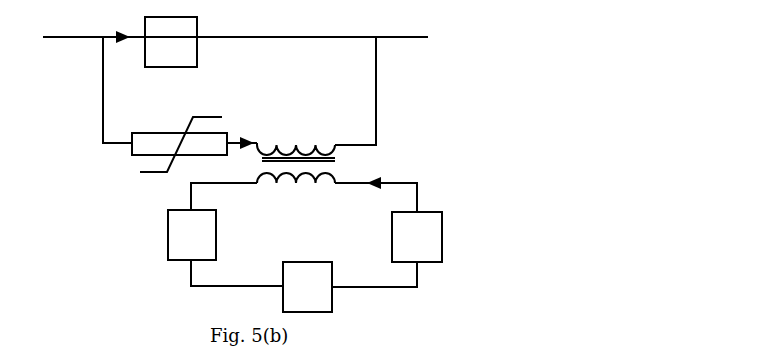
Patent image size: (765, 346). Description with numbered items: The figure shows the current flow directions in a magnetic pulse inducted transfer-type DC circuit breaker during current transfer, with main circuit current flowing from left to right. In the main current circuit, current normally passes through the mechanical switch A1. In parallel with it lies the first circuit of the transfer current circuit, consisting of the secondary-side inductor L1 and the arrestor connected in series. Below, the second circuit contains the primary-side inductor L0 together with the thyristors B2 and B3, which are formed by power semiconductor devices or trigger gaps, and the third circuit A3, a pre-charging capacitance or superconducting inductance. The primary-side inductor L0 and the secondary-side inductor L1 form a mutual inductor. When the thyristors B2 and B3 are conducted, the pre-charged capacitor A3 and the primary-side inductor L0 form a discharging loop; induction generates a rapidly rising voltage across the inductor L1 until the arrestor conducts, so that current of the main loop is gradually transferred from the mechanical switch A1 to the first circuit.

The mechanical switch A1 is at (171, 42).
The element arrestor is at (194, 129).
The secondary-side inductor L1 is at (296, 138).
The primary-side inductor L0 is at (296, 194).
The thyristor B3 is at (192, 235).
The pre-charged capacitor A3 is at (307, 287).
The thyristor B2 is at (417, 237).